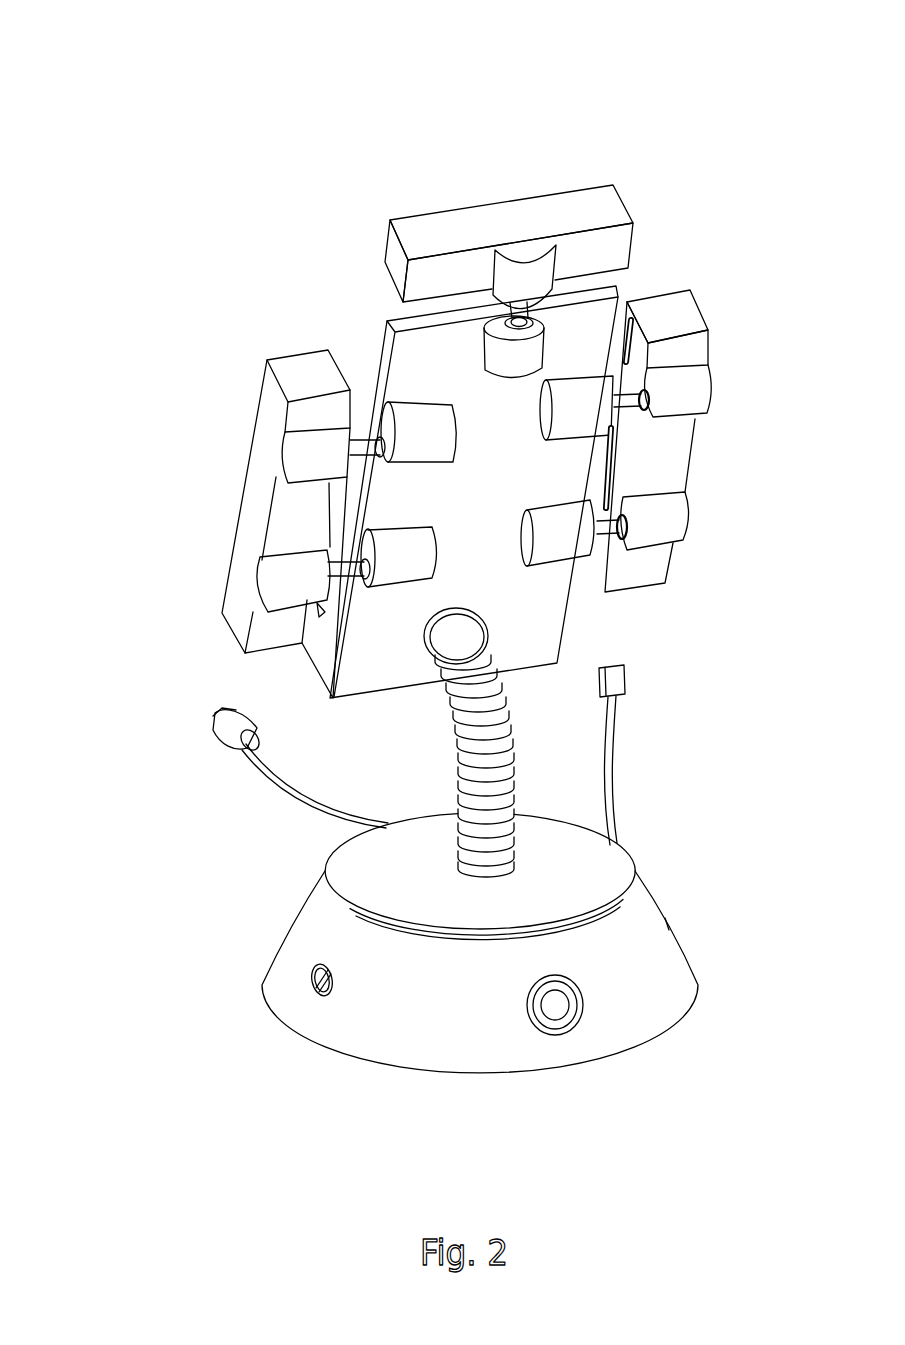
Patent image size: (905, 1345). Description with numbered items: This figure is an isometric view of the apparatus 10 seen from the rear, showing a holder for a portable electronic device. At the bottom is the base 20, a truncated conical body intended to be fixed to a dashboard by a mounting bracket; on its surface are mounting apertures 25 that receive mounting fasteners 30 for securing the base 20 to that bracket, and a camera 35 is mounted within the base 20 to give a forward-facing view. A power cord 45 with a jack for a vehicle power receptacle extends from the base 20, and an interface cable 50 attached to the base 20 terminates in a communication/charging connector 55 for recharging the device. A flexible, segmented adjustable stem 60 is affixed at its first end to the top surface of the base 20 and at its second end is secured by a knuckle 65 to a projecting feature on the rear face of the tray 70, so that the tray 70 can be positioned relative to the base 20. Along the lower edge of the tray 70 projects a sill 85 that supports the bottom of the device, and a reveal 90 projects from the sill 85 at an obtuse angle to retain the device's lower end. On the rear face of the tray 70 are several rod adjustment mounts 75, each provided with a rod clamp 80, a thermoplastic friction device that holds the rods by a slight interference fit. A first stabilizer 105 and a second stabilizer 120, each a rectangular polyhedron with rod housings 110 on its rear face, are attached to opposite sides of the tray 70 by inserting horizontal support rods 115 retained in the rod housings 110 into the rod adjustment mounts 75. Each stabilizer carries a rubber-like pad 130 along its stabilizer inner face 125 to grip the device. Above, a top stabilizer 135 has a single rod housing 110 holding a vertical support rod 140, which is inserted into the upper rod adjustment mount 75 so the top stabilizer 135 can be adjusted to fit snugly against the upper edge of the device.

The apparatus 10 is at (86, 168).
The base 20 is at (317, 1030).
The mounting aperture 25 is at (308, 983).
The mounting fastener 30 is at (312, 967).
The camera 35 is at (568, 1017).
The power cord 45 is at (298, 787).
The interface cable 50 is at (615, 767).
The communication/charging connector 55 is at (610, 683).
The adjustable stem 60 is at (473, 737).
The knuckle 65 is at (480, 622).
The tray 70 is at (533, 643).
The rod adjustment mount 75 is at (495, 340).
The rod clamp 80 is at (482, 350).
The sill 85 is at (315, 665).
The reveal 90 is at (323, 605).
The first stabilizer 105 is at (257, 463).
The rod housing 110 is at (298, 448).
The horizontal support rod 115 is at (625, 405).
The second stabilizer 120 is at (643, 560).
The stabilizer inner face 125 is at (645, 342).
The pad 130 is at (625, 360).
The top stabilizer 135 is at (484, 220).
The vertical support rod 140 is at (528, 313).